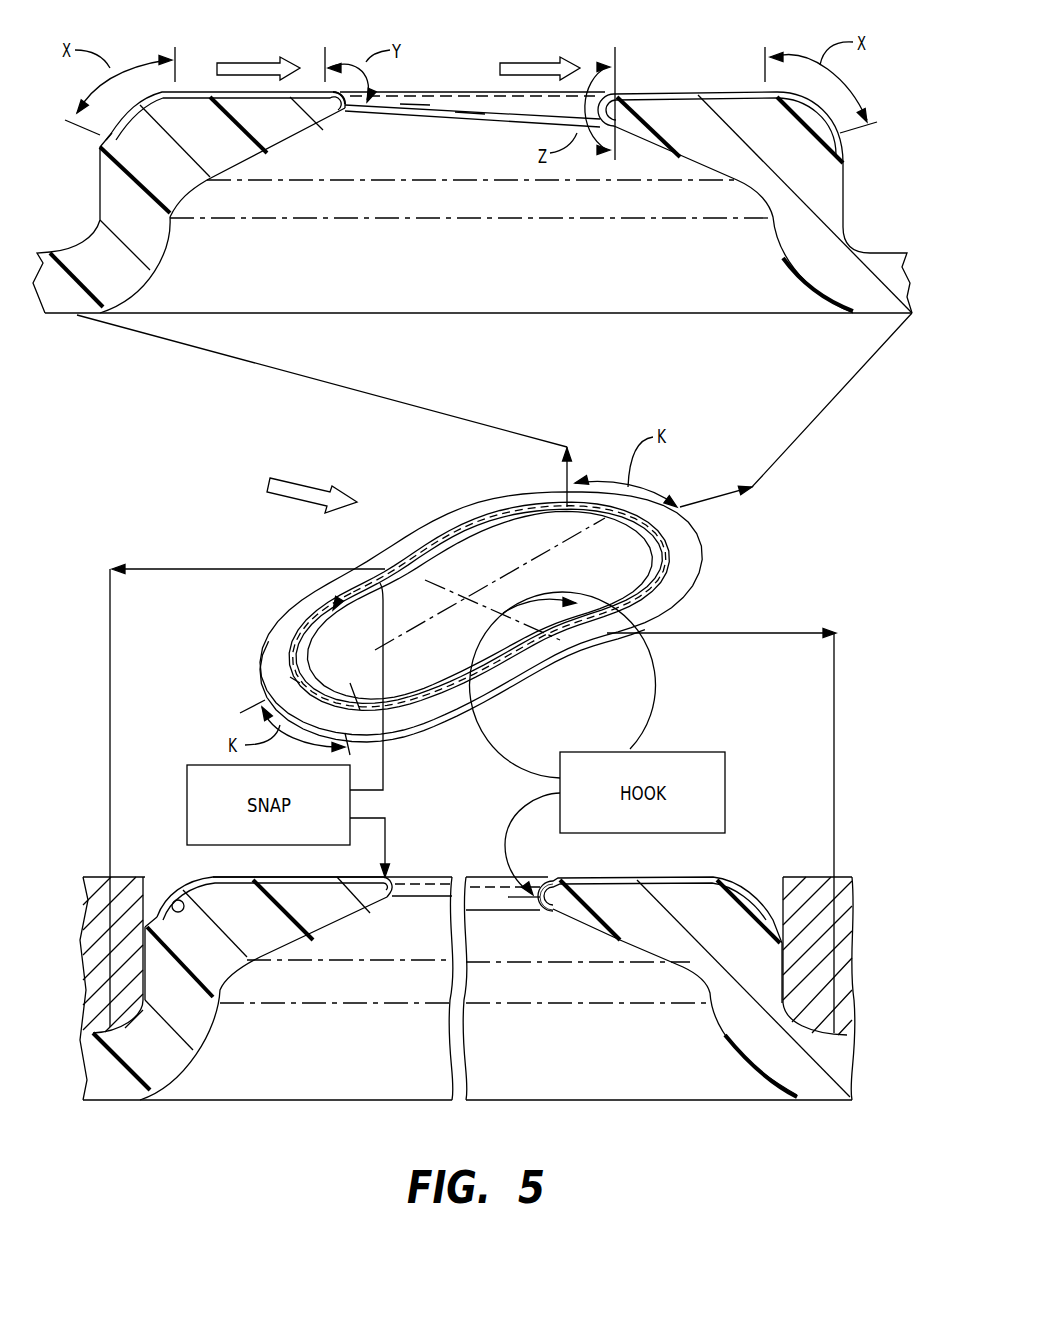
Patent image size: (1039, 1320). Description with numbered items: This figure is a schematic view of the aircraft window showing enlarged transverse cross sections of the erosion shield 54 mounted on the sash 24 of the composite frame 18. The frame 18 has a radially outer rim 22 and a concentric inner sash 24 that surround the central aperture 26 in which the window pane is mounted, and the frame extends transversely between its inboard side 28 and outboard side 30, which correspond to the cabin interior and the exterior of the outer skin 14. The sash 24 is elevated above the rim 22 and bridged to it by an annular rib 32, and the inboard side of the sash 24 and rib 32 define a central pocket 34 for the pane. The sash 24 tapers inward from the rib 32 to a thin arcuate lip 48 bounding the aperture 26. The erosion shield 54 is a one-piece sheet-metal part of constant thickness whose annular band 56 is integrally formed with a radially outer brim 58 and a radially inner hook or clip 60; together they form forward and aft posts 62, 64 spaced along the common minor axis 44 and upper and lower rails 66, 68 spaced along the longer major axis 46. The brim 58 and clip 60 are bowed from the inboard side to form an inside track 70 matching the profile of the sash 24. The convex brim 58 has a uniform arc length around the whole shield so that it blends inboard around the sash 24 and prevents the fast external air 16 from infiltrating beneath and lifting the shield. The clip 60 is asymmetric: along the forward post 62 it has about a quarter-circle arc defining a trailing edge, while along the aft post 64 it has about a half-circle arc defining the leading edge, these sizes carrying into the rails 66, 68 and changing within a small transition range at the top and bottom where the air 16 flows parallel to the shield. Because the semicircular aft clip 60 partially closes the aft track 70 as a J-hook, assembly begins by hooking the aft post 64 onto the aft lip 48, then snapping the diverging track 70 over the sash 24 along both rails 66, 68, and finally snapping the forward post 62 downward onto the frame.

The outer skin 14 is at (810, 877).
The external air 16 is at (248, 60).
The composite frame 18 is at (413, 522).
The rim 22 is at (66, 309).
The sash 24 is at (231, 152).
The central aperture 26 is at (421, 90).
The inboard side 28 is at (725, 315).
The outboard side 30 is at (700, 90).
The rib 32 is at (100, 190).
The central pocket 34 is at (487, 262).
The minor axis 44 is at (440, 578).
The major axis 46 is at (552, 565).
The arcuate lip 48 is at (347, 113).
The erosion shield 54 is at (480, 86).
The band 56 is at (205, 90).
The brim 58 is at (110, 133).
The clip 60 is at (420, 107).
The forward post 62 is at (388, 563).
The aft post 64 is at (545, 650).
The upper rail 66 is at (553, 495).
The lower rail 68 is at (285, 672).
The track 70 is at (172, 900).